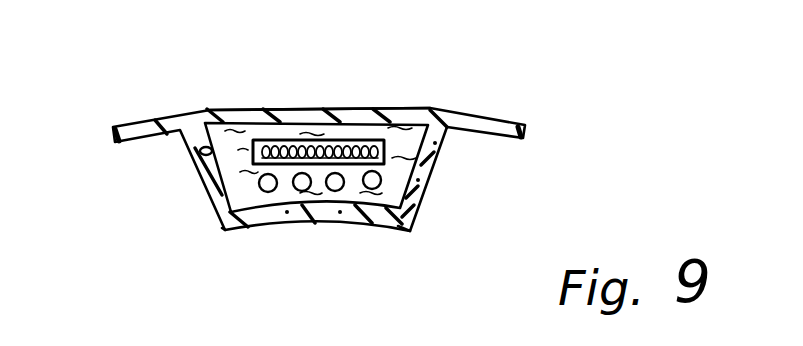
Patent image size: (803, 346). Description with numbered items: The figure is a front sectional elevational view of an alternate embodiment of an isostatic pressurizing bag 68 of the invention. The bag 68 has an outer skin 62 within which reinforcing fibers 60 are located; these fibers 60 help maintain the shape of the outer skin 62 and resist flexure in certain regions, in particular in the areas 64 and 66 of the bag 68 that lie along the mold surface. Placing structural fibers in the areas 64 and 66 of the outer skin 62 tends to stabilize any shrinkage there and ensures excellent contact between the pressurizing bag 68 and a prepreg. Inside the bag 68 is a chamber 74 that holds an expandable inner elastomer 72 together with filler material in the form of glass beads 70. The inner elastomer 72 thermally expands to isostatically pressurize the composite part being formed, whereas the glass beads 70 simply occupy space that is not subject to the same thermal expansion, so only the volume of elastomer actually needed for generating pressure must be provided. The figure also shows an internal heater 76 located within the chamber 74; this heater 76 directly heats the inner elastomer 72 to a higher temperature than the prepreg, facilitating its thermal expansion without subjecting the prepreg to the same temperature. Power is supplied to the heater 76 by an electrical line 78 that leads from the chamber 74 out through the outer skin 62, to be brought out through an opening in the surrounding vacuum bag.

The fibers 60 is at (197, 158).
The outer skin 62 is at (450, 133).
The area 64 is at (362, 228).
The area 66 is at (220, 190).
The bag 68 is at (291, 88).
The glass beads 70 is at (222, 228).
The inner elastomer 72 is at (413, 138).
The chamber 74 is at (197, 150).
The internal heater 76 is at (283, 139).
The electrical line 78 is at (382, 110).